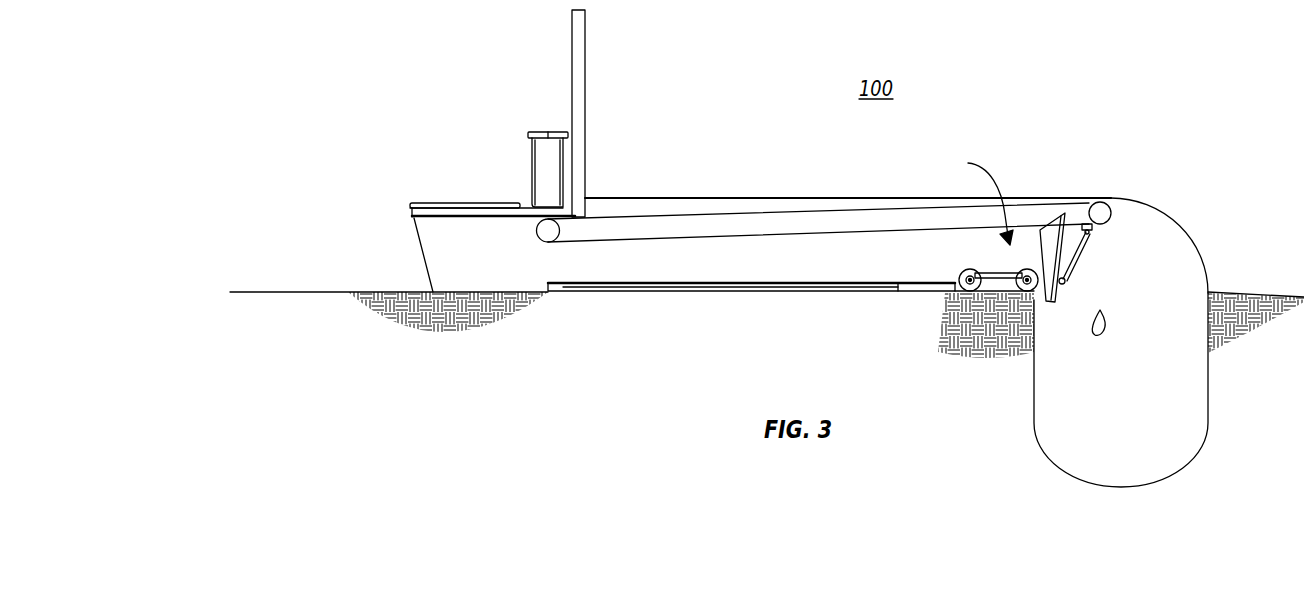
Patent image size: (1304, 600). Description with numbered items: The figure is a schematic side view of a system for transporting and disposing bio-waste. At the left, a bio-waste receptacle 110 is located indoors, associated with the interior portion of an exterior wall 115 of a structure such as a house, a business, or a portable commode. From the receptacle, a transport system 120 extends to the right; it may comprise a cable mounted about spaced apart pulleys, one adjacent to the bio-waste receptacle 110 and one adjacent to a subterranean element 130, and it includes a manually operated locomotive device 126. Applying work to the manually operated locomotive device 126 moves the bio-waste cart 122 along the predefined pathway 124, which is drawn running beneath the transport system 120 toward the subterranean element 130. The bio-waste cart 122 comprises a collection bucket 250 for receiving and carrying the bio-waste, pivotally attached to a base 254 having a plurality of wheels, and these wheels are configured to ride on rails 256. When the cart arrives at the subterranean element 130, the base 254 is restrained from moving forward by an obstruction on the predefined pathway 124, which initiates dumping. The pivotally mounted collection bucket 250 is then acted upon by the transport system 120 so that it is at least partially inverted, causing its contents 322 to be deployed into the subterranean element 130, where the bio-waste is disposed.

The bio-waste receptacle 110 is at (413, 213).
The exterior wall 115 is at (573, 66).
The transport system 120 is at (708, 230).
The bio-waste cart 122 is at (972, 199).
The predefined pathway 124 is at (712, 293).
The manually operated locomotive device 126 is at (553, 238).
The subterranean element 130 is at (1166, 464).
The collection bucket 250 is at (1053, 216).
The base 254 is at (951, 290).
The rails 256 is at (640, 290).
The contents 322 is at (1102, 333).